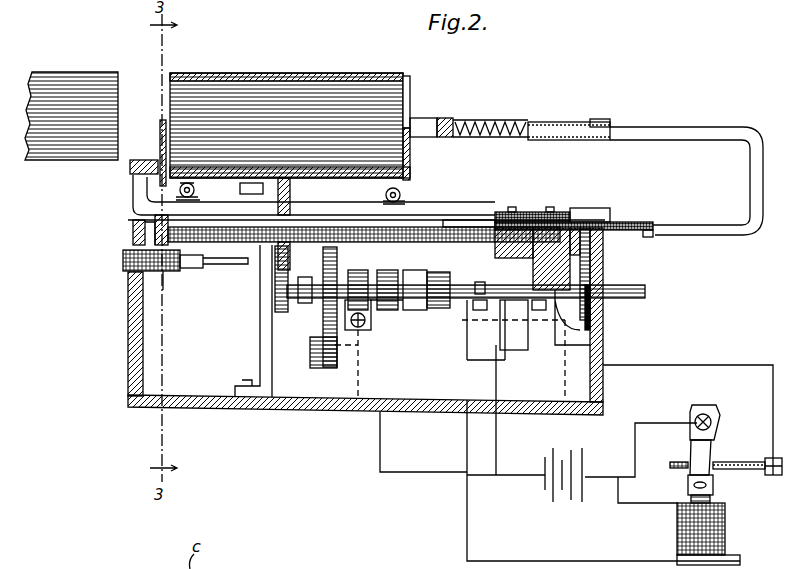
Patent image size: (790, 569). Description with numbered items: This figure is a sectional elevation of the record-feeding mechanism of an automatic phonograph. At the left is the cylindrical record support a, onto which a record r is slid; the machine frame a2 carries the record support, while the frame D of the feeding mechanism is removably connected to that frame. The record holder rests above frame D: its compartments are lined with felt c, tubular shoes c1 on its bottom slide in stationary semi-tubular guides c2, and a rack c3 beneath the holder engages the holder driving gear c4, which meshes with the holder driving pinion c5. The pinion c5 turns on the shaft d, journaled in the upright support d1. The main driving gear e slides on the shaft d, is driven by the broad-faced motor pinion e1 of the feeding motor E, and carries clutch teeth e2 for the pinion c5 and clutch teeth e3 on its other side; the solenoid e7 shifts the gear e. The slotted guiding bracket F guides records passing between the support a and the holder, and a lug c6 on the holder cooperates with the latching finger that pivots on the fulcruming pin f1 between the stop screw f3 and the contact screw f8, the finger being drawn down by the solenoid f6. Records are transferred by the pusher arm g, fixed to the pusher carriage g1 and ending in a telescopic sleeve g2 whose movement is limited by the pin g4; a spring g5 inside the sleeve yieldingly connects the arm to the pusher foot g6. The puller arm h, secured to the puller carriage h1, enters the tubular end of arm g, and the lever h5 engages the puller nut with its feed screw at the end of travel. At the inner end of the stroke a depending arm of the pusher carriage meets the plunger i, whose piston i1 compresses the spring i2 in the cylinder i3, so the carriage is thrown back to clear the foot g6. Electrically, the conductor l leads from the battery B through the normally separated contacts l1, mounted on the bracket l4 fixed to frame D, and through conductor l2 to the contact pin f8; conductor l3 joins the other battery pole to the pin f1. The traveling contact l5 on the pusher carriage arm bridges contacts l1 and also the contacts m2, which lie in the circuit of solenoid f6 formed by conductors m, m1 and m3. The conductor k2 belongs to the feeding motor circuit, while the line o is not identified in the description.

The record support a is at (80, 157).
The record r is at (322, 73).
The conductor k2 is at (160, 136).
The lining c is at (411, 115).
The tubular shoes c1 is at (194, 199).
The semi-tubular guides c2 is at (197, 192).
The rack c3 is at (292, 192).
The holder driving gear c4 is at (290, 255).
The holder driving pinion c5 is at (275, 298).
The lug c6 is at (262, 184).
The slotted guiding bracket F is at (130, 170).
The puller arm h is at (150, 180).
The puller carriage h1 is at (532, 212).
The lever h5 is at (710, 448).
The pusher arm g is at (680, 127).
The pusher carriage g1 is at (568, 218).
The telescopic sleeve g2 is at (540, 120).
The pin g4 is at (601, 119).
The spring g5 is at (490, 118).
The pusher foot g6 is at (447, 118).
The plunger i is at (208, 266).
The piston i1 is at (190, 271).
The compression spring i2 is at (123, 264).
The cylinder i3 is at (195, 255).
The main driving gear e is at (357, 274).
The motor pinion e1 is at (320, 368).
The clutch teeth e2 is at (303, 305).
The clutch teeth e3 is at (374, 276).
The solenoid e7 is at (390, 308).
The shaft d is at (438, 306).
The stationary upright support d1 is at (258, 342).
The contacts m2 is at (478, 284).
The frame a2 is at (585, 262).
The contacts l1 is at (585, 284).
The bracket l4 is at (597, 301).
The traveling contact l5 is at (508, 322).
The frame of the feeding mechanism D is at (604, 323).
The feeding motor E is at (416, 380).
The conductor l is at (380, 440).
The conductor l2 is at (680, 365).
The conductor l3 is at (645, 423).
The conductor o is at (496, 440).
The conductor m is at (635, 506).
The conductor m1 is at (467, 520).
The conductor m3 is at (498, 383).
The battery B is at (563, 488).
The fulcruming pin f1 is at (715, 425).
The stop screw f3 is at (670, 465).
The solenoid f6 is at (725, 540).
The contact screw f8 is at (722, 472).